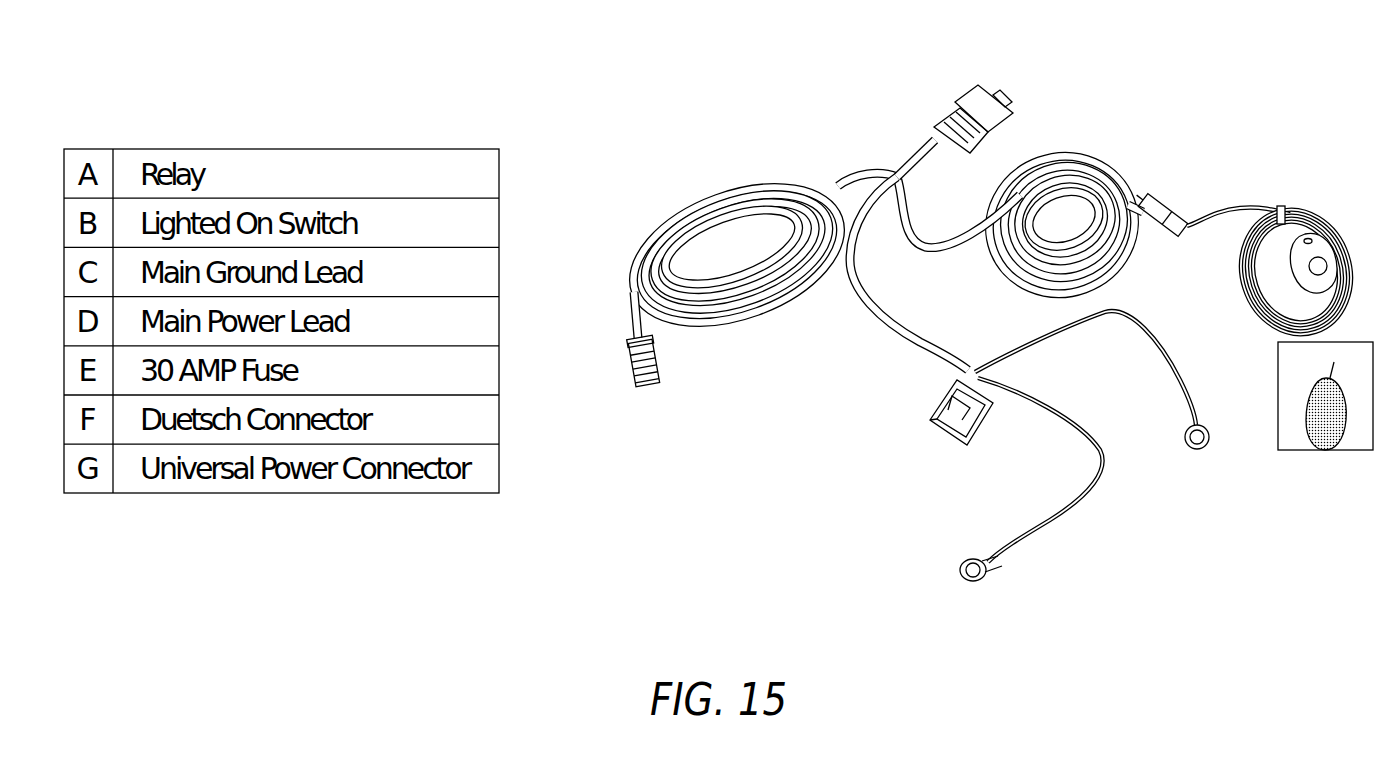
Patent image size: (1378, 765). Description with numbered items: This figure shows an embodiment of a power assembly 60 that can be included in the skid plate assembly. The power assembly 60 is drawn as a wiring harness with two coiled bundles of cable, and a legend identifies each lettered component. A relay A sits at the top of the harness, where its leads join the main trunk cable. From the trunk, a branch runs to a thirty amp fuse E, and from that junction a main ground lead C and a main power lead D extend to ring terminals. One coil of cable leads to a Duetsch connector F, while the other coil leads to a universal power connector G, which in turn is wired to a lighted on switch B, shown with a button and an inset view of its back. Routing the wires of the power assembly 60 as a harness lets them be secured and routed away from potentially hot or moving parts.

The power assembly 60 is at (645, 88).
The relay A is at (973, 104).
The lighted on switch B is at (1280, 322).
The main ground lead C is at (1092, 395).
The main power lead D is at (1019, 479).
The 30 AMP fuse E is at (961, 423).
The Duetsch connector F is at (644, 374).
The universal power connector G is at (1160, 207).